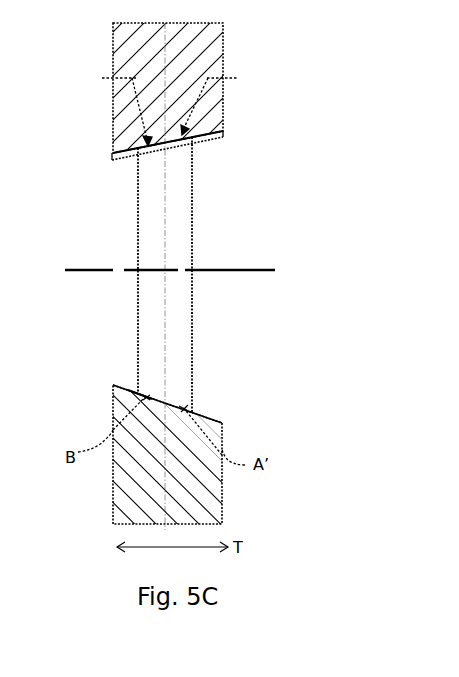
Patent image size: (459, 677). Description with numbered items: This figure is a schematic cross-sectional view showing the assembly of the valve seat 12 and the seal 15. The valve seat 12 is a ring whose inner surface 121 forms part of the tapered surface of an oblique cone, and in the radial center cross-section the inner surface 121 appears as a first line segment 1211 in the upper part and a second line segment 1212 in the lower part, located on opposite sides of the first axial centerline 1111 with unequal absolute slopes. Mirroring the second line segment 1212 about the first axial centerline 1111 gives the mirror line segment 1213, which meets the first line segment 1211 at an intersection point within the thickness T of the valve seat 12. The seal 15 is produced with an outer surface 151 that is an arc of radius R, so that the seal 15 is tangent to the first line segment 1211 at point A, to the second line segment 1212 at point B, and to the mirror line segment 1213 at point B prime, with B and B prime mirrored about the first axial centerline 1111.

The valve seat 12 is at (227, 60).
The inner surface 121 is at (113, 148).
The first line segment 1211 is at (212, 141).
The mirror line segment 1213 is at (126, 158).
The first axial centerline 1111 is at (90, 274).
The seal 15 is at (202, 323).
The outer surface 151 is at (138, 395).
The second line segment 1212 is at (212, 420).